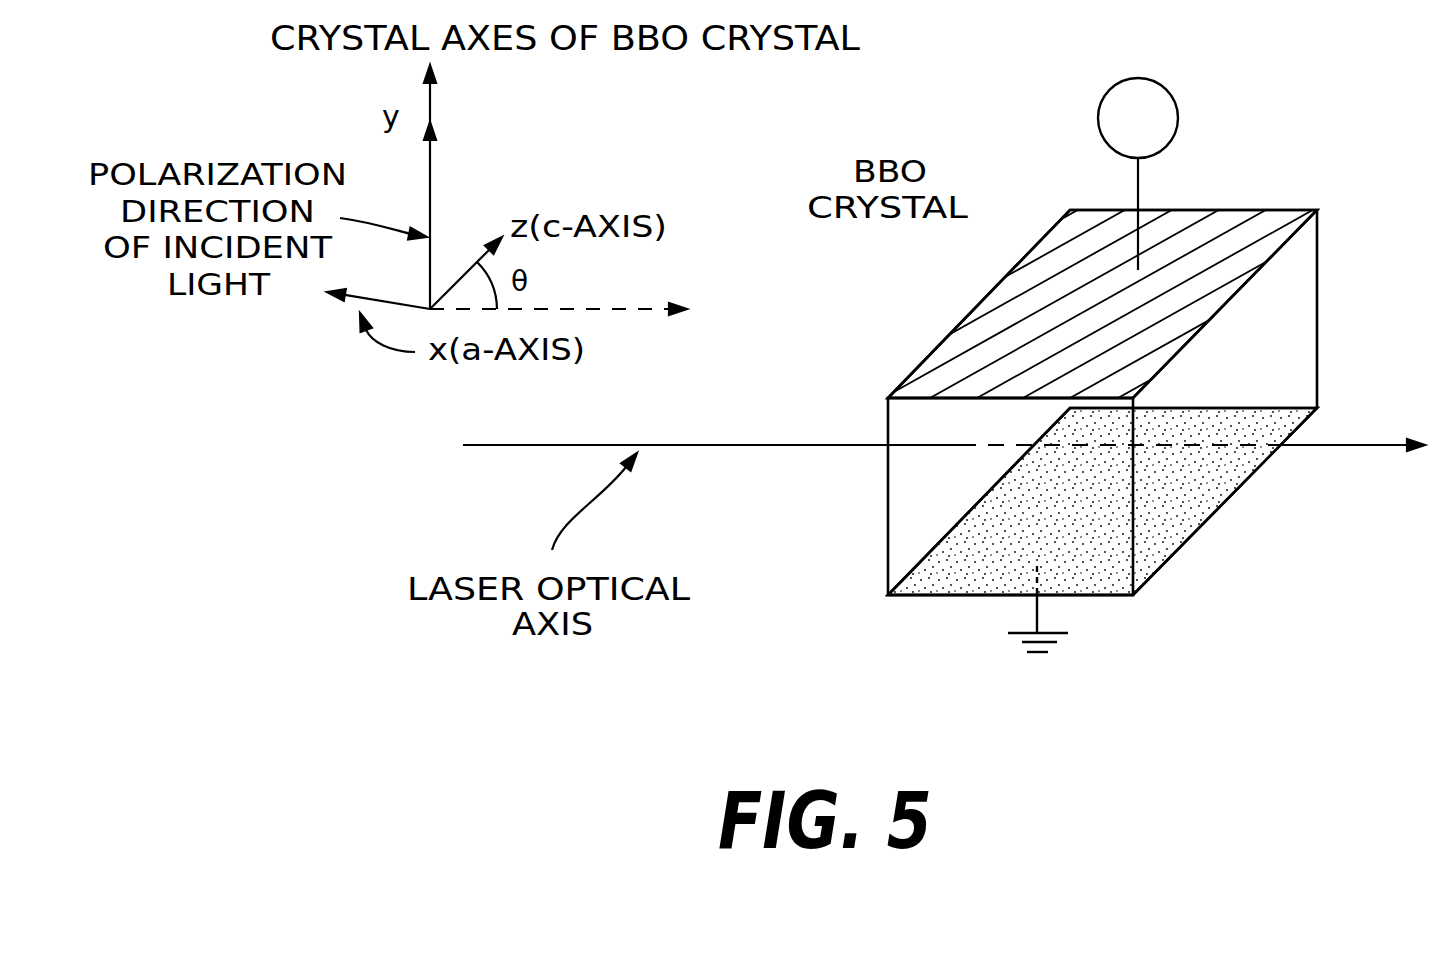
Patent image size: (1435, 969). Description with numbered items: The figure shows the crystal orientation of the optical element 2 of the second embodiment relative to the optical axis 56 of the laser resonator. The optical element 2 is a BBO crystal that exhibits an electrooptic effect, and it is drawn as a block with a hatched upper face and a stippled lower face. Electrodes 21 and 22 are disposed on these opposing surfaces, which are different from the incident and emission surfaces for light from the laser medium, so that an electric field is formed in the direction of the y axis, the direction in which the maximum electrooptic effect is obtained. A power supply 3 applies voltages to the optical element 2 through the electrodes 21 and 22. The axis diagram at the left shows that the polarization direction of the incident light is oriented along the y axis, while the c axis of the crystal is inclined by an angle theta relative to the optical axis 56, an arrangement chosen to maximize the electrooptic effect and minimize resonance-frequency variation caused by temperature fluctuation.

The optical element 2 is at (1300, 313).
The power supply 3 is at (1175, 100).
The electrode 21 is at (1217, 233).
The electrode 22 is at (1237, 492).
The optical axis 56 is at (645, 308).